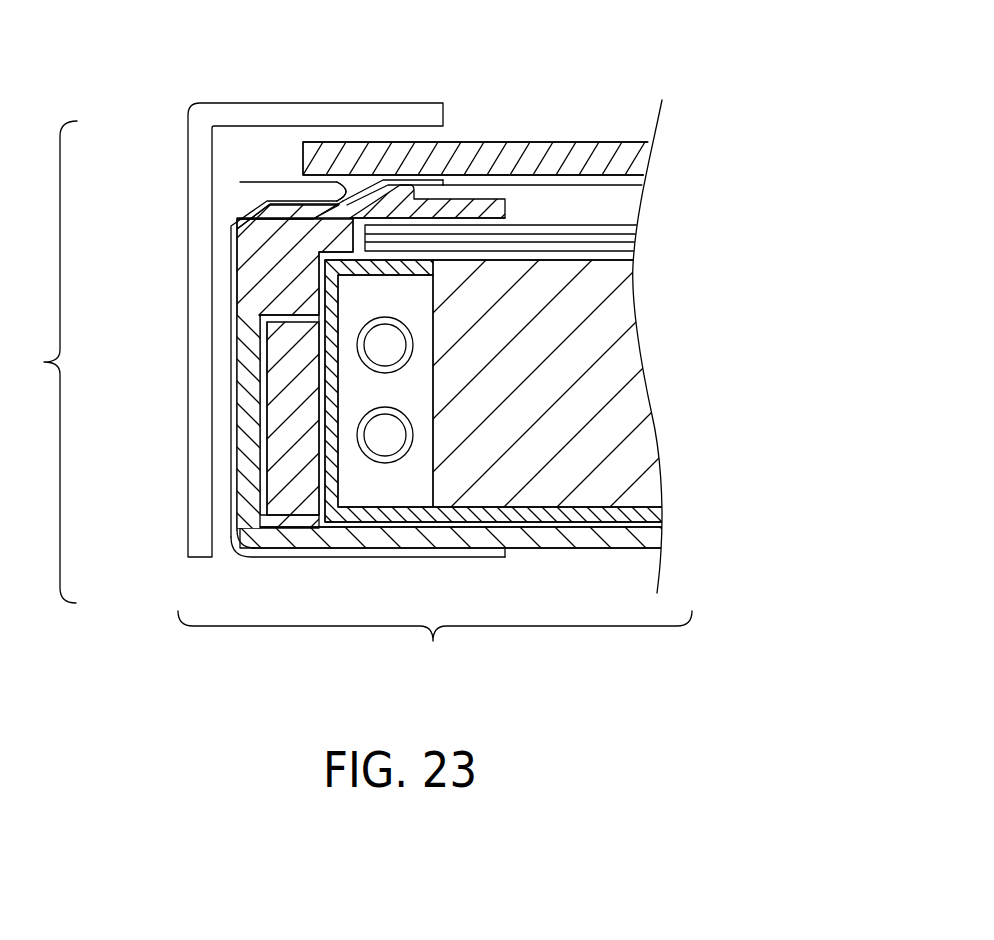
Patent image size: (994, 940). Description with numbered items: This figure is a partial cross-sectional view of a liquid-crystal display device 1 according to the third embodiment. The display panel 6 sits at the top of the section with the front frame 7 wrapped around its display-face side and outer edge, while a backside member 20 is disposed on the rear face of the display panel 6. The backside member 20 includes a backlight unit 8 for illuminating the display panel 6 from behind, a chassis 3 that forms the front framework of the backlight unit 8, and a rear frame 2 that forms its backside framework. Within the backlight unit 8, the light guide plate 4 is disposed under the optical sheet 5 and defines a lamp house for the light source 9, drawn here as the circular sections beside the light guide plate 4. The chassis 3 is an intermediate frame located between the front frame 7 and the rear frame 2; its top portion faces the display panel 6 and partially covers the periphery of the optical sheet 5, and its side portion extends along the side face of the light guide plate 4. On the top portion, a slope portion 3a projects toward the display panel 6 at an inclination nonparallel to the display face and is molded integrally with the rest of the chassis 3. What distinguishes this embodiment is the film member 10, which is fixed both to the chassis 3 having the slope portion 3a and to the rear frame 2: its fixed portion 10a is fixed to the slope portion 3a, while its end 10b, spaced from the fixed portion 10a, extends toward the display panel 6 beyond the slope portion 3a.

The liquid-crystal display device 1 is at (47, 362).
The rear frame 2 is at (627, 552).
The chassis 3 is at (238, 386).
The slope portion 3a is at (233, 221).
The light guide plate 4 is at (618, 313).
The optical sheet 5 is at (612, 222).
The display panel 6 is at (601, 142).
The front frame 7 is at (266, 103).
The backlight unit 8 is at (435, 641).
The light source 9 is at (411, 452).
The film member 10 is at (240, 182).
The fixed portion 10a is at (337, 191).
The end 10b is at (446, 179).
The backside member 20 is at (783, 248).